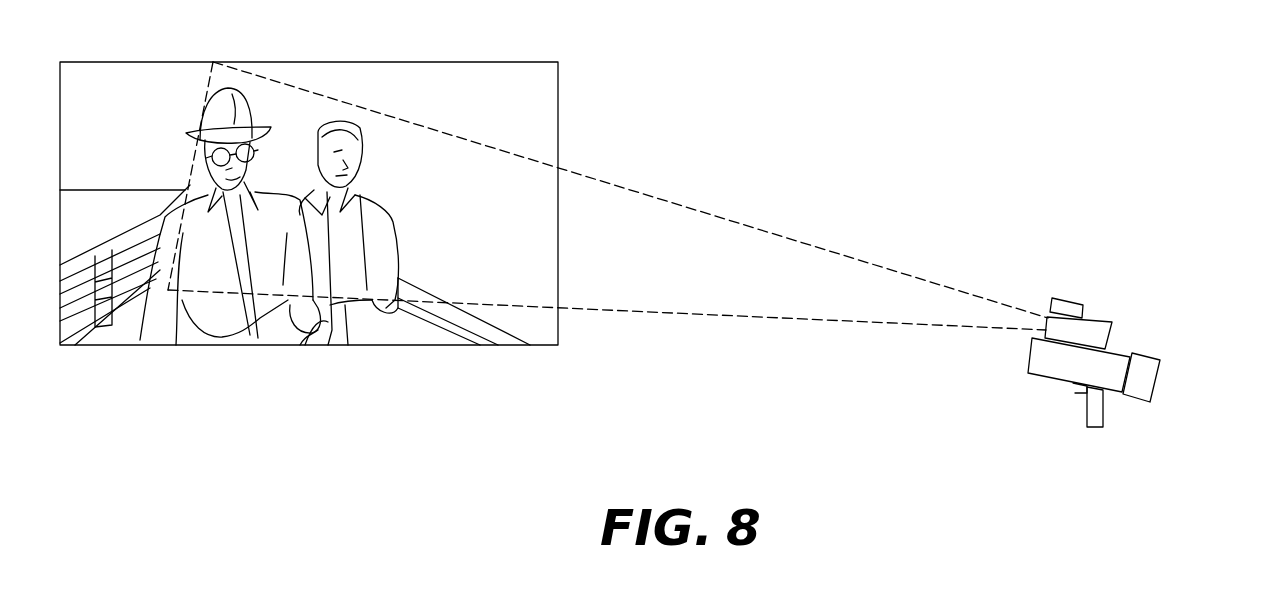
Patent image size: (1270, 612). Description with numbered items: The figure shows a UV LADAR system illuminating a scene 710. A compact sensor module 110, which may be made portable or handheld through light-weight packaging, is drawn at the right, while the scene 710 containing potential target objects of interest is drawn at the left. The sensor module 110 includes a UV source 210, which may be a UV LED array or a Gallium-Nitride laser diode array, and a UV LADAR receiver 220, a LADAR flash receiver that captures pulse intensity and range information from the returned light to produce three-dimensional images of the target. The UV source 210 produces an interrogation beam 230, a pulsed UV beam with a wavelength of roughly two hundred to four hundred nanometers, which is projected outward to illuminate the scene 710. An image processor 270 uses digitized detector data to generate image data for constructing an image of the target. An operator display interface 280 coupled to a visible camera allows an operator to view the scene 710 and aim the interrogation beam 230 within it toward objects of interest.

The scene 710 is at (560, 70).
The interrogation beam 230 is at (732, 222).
The UV sensor module 110 is at (1094, 337).
The UV source 210 is at (1110, 327).
The UV LADAR receiver 220 is at (1040, 377).
The image processor 270 is at (1066, 298).
The operator display interface 280 is at (1152, 400).